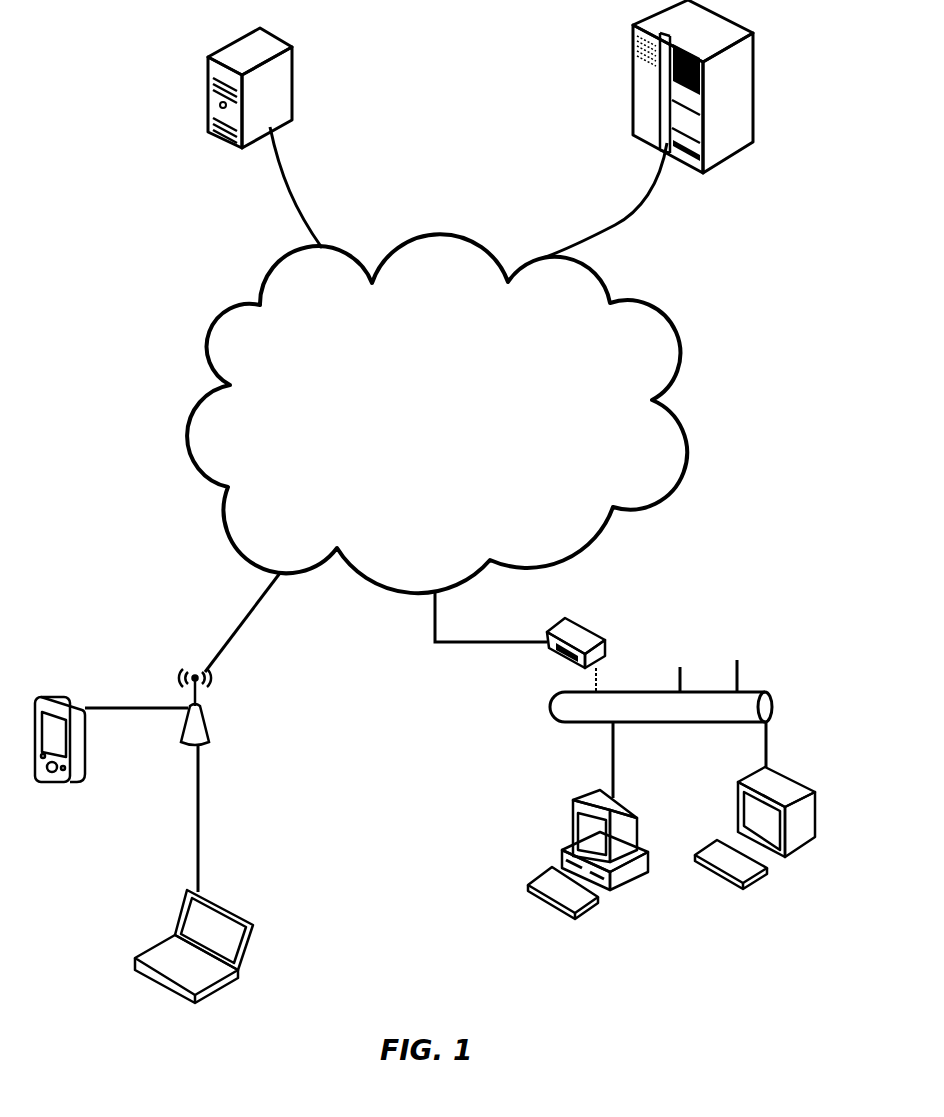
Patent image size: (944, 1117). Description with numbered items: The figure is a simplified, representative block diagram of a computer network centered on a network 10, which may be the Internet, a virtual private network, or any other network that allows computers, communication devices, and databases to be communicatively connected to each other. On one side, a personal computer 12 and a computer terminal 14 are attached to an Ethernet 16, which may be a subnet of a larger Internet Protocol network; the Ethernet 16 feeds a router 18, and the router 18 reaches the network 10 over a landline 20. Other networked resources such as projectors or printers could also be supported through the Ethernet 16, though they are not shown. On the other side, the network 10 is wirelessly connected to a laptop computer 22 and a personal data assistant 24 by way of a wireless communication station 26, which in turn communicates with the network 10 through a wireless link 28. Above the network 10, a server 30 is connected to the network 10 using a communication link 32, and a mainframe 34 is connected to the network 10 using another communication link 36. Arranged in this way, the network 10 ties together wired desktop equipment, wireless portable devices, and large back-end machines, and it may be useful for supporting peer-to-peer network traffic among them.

The network 10 is at (148, 306).
The personal computer 12 is at (572, 840).
The computer terminal 14 is at (802, 783).
The Ethernet 16 is at (765, 692).
The router 18 is at (605, 642).
The landline 20 is at (472, 643).
The laptop computer 22 is at (220, 992).
The personal data assistant 24 is at (63, 700).
The wireless communication station 26 is at (207, 737).
The wireless link 28 is at (236, 632).
The server 30 is at (293, 88).
The communication link 32 is at (305, 223).
The mainframe 34 is at (713, 168).
The communication link 36 is at (638, 208).